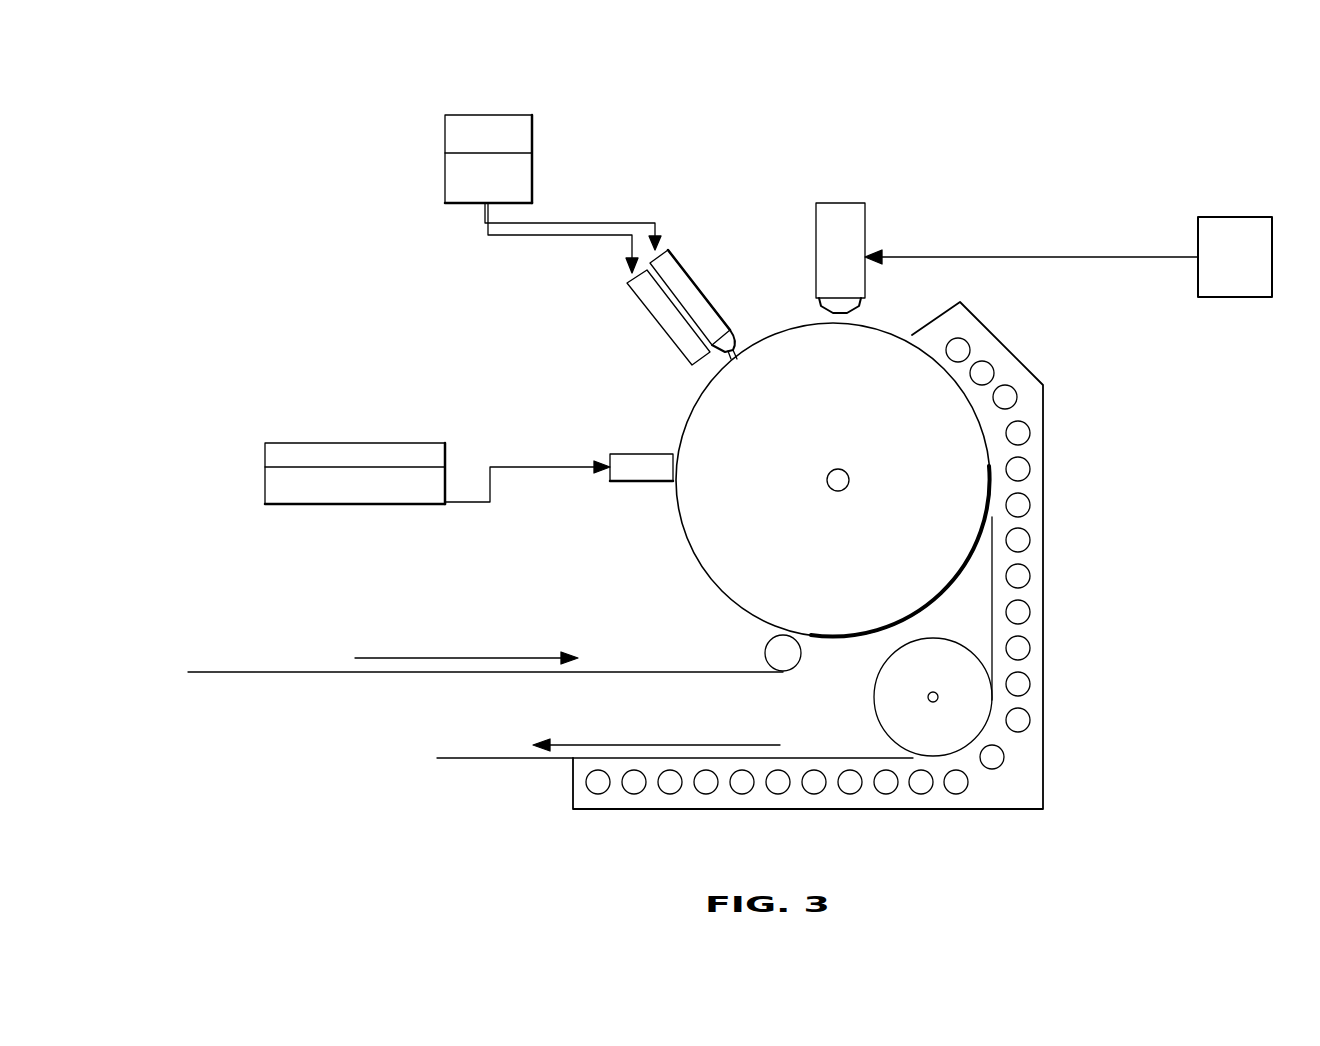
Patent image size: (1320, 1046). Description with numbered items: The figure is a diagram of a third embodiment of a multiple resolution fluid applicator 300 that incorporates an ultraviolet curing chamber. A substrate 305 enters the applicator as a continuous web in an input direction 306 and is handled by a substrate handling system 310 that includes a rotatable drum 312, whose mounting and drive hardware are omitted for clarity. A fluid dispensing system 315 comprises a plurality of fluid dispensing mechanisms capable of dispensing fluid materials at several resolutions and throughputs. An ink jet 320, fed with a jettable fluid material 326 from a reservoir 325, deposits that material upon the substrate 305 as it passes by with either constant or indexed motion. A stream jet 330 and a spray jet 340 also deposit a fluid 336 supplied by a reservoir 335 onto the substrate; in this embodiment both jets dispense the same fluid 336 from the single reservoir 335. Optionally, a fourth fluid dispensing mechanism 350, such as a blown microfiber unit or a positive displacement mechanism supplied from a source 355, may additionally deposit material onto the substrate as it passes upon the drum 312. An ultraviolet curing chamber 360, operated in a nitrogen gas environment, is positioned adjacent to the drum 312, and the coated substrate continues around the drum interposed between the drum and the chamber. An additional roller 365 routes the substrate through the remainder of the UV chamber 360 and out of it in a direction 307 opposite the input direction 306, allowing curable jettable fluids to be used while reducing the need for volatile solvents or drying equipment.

The fluid applicator 300 is at (1031, 138).
The substrate 305 is at (260, 673).
The input direction 306 is at (448, 658).
The direction 307 is at (615, 742).
The substrate handling system 310 is at (370, 745).
The rotatable drum 312 is at (678, 528).
The fluid dispensing system 315 is at (390, 332).
The ink jet 320 is at (642, 453).
The reservoir 325 is at (362, 442).
The jettable fluid material 326 is at (292, 505).
The stream jet 330 is at (641, 303).
The reservoir 335 is at (490, 114).
The fluid 336 is at (533, 168).
The spray jet 340 is at (698, 278).
The fourth fluid dispensing mechanism 350 is at (843, 203).
The source 355 is at (1220, 217).
The ultraviolet curing chamber 360 is at (1043, 520).
The additional roller 365 is at (938, 737).